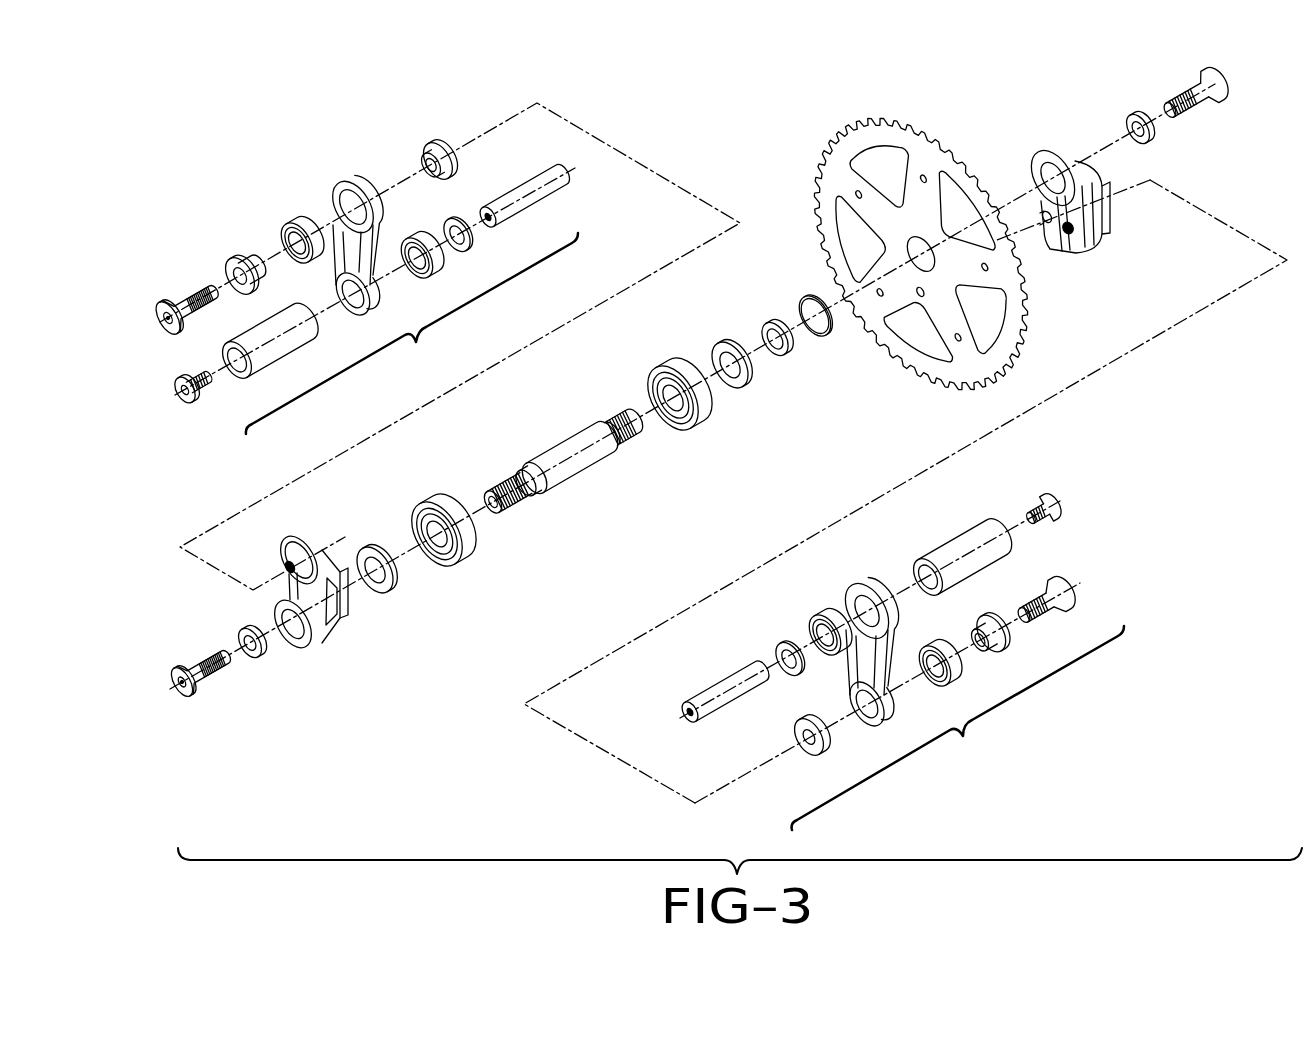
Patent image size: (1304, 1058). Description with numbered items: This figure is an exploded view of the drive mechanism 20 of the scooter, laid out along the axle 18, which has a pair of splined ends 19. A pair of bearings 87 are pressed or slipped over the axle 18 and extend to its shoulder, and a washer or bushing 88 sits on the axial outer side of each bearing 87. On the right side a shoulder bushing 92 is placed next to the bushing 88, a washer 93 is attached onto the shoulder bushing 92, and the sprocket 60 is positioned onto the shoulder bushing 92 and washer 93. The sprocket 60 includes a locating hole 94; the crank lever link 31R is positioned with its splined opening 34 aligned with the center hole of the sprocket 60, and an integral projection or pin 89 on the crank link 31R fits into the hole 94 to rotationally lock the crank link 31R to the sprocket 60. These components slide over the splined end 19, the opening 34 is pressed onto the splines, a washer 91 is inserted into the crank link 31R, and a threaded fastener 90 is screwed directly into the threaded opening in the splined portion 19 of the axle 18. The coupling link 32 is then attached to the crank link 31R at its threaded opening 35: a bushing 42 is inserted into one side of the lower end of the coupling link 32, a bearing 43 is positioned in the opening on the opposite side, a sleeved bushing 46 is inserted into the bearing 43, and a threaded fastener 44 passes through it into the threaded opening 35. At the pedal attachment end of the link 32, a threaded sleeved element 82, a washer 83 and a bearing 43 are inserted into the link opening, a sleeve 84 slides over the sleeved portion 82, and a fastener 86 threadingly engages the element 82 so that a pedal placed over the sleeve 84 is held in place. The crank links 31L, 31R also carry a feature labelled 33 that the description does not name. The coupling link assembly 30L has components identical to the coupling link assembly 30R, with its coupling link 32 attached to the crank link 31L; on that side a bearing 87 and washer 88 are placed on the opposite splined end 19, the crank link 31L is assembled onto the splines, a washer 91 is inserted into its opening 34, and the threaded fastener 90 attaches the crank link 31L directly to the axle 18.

The axle 18 is at (588, 502).
The splined ends 19 is at (518, 507).
The drive mechanism 20 is at (706, 444).
The coupling link assembly 30L is at (412, 333).
The coupling link assembly 30R is at (958, 728).
The crank link 31L is at (316, 643).
The crank lever link 31R is at (1058, 150).
The coupling link 32 is at (346, 186).
The clamp portion 33 is at (335, 620).
The splined opening 34 is at (292, 641).
The threaded opening 35 is at (284, 569).
The bushing 42 is at (422, 150).
The bearing 43 is at (292, 224).
The threaded fastener 44 is at (182, 305).
The sleeved bushing 46 is at (234, 260).
The sprocket 60 is at (907, 252).
The threaded sleeved element 82 is at (528, 190).
The washer 83 is at (470, 243).
The sleeve 84 is at (272, 350).
The fastener 86 is at (183, 385).
The bearing 87 is at (457, 554).
The washer or bushing 88 is at (375, 550).
The integral projection or pin 89 is at (1048, 223).
The threaded fastener 90 is at (200, 688).
The washer 91 is at (240, 643).
The shoulder bushing 92 is at (782, 357).
The washer 93 is at (808, 302).
The locating hole 94 is at (922, 299).